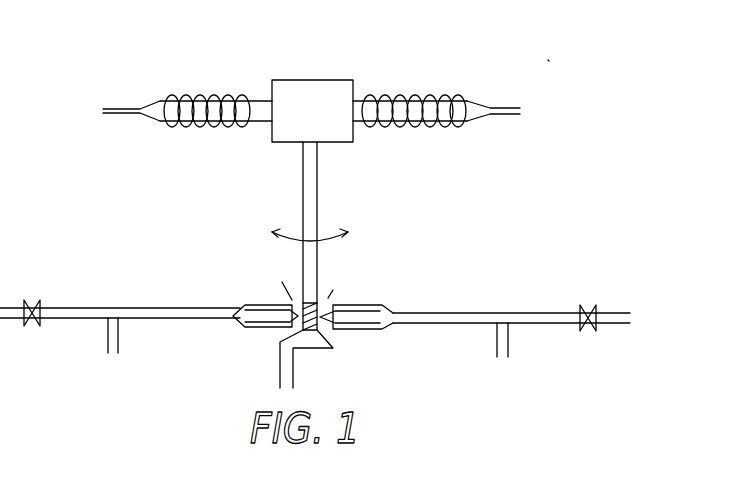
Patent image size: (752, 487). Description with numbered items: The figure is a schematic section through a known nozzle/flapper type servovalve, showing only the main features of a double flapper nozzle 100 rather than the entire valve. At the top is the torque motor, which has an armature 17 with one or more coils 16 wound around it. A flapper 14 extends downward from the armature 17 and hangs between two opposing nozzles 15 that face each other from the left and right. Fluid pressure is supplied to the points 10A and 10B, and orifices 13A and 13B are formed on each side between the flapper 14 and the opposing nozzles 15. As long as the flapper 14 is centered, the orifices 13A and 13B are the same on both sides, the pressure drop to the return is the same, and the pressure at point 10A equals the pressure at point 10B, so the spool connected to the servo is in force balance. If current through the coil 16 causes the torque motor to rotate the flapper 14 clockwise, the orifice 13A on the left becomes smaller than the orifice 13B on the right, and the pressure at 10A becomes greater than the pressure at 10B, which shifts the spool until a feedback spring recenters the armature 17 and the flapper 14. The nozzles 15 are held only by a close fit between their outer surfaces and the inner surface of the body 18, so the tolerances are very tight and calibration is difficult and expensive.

The double flapper nozzle 100 is at (550, 62).
The armature 17 is at (312, 80).
The coil 16 is at (160, 122).
The flapper 14 is at (320, 181).
The nozzle 15 is at (252, 300).
The orifice 13A is at (279, 341).
The orifice 13B is at (322, 333).
The body 18 is at (160, 308).
The point 10A is at (115, 356).
The point 10B is at (500, 360).